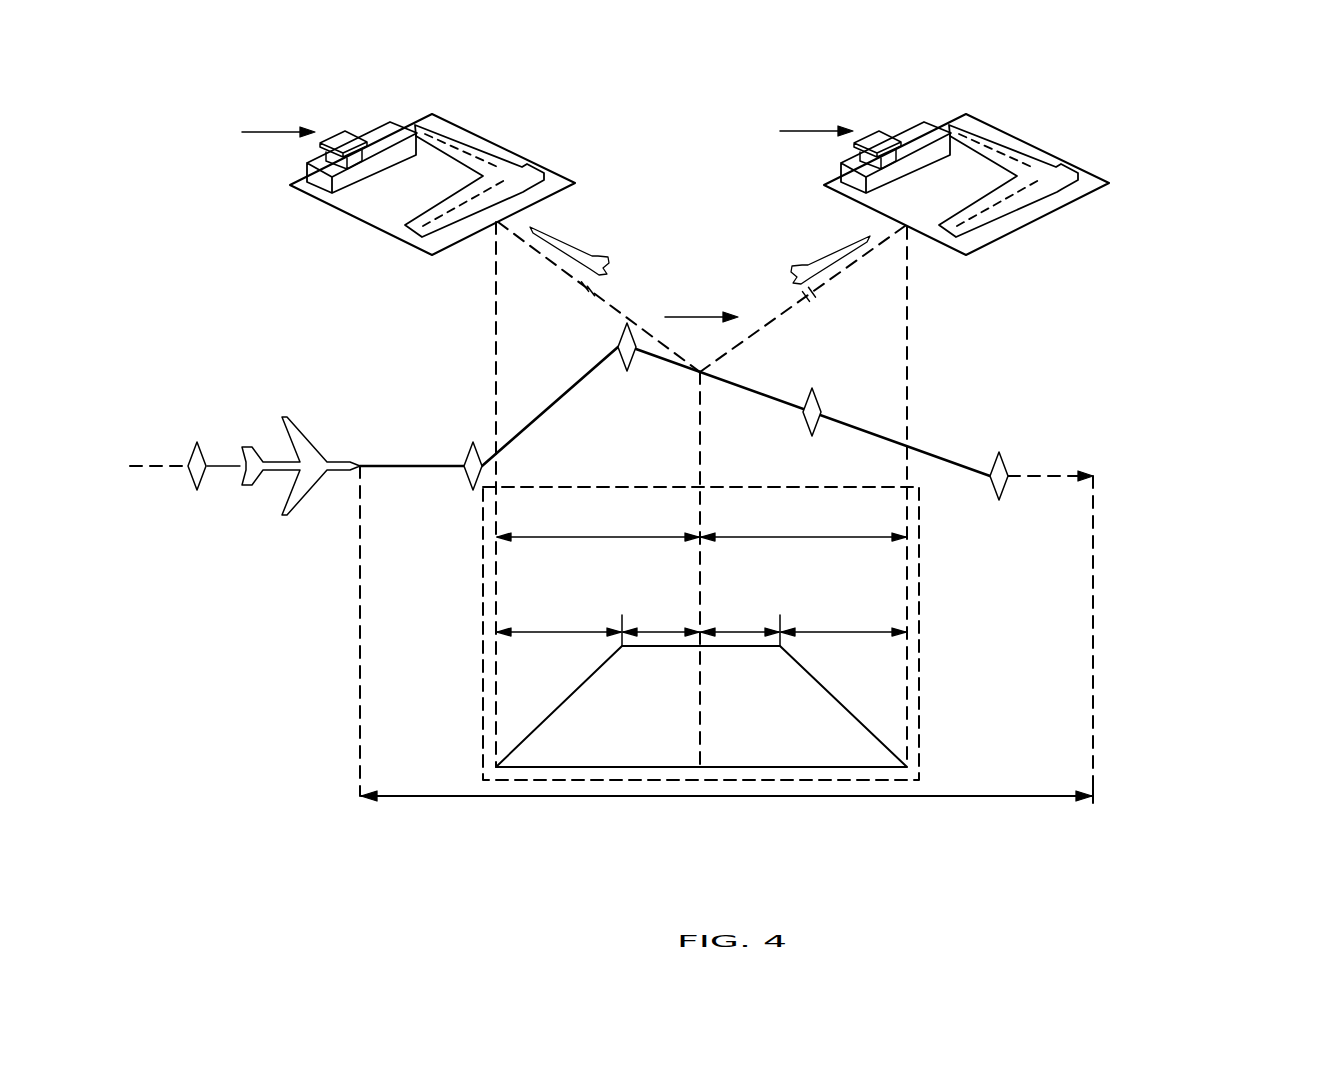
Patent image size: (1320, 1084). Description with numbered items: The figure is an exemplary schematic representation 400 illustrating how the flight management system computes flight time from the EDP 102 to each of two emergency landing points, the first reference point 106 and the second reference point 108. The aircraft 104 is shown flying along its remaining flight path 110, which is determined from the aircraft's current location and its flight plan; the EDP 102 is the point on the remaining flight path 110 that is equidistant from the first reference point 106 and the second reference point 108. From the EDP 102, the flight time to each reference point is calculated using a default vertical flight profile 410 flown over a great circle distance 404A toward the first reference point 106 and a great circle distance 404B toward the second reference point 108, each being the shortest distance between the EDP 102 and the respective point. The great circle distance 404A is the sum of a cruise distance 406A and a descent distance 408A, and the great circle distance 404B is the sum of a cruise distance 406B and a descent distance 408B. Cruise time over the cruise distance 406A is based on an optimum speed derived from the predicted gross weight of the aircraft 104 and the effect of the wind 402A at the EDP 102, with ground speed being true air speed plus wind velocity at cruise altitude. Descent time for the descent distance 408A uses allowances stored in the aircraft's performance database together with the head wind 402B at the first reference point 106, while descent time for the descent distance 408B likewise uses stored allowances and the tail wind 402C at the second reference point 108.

The EDP 102 is at (701, 370).
The aircraft 104 is at (281, 420).
The first reference point 106 is at (376, 226).
The second reference point 108 is at (1020, 230).
The remaining flight path 110 is at (710, 797).
The schematic representation 400 is at (1096, 847).
The wind 402A is at (694, 316).
The head wind 402B is at (270, 131).
The tail wind 402C is at (809, 130).
The great circle distance 404A is at (647, 537).
The great circle distance 404B is at (852, 537).
The cruise distance 406A is at (558, 631).
The cruise distance 406B is at (844, 631).
The descent distance 408A is at (659, 631).
The descent distance 408B is at (746, 631).
The vertical flight profile 410 is at (920, 657).